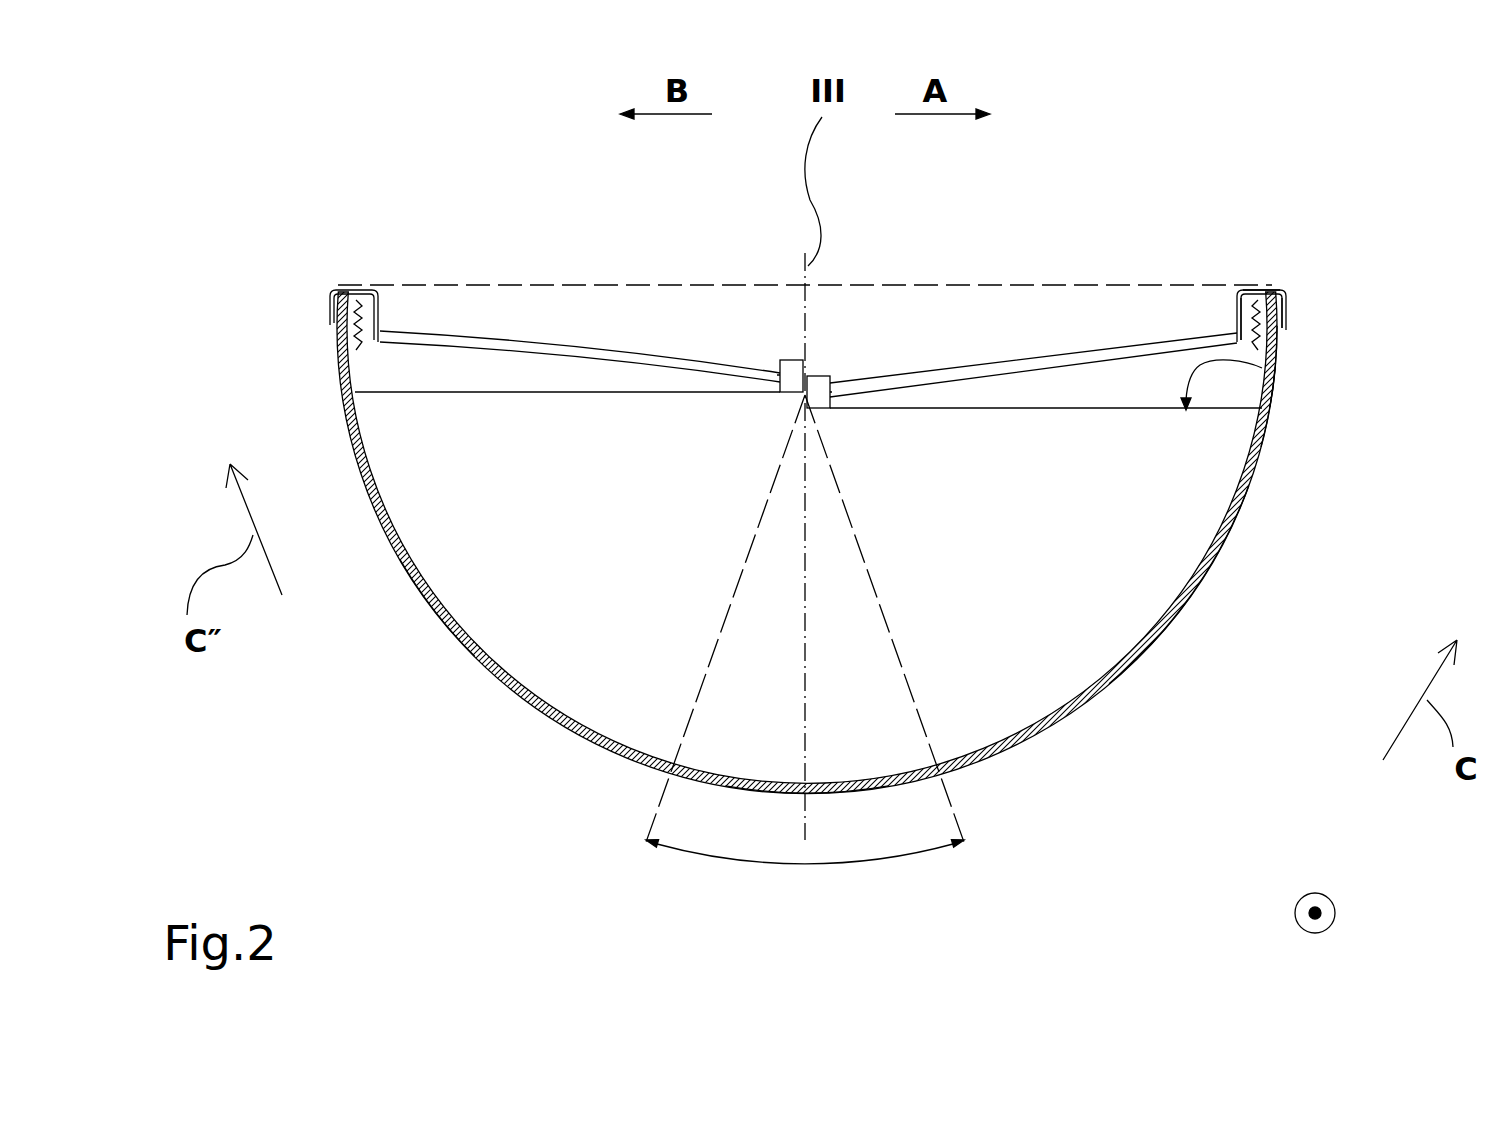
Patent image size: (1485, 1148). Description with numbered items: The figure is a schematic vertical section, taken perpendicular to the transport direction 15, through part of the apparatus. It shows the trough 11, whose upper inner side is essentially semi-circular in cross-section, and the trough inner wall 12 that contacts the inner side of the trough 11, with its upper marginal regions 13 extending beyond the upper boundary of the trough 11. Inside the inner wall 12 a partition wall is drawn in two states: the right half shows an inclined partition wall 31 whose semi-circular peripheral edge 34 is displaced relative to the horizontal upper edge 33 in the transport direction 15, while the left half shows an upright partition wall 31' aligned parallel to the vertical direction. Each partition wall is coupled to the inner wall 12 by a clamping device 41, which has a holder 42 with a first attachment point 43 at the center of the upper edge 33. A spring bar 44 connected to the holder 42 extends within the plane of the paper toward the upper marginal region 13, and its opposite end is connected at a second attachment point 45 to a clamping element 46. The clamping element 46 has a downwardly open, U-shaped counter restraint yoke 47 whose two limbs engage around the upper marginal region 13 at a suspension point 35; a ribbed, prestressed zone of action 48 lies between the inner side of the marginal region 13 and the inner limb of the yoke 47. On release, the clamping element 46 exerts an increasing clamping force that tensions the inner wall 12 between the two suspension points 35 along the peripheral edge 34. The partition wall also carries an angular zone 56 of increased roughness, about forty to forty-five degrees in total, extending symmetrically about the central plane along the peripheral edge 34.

The trough 11 is at (1110, 677).
The trough inner wall 12 is at (1013, 742).
The upper marginal region 13 is at (1275, 344).
The transport direction 15 is at (1333, 897).
The partition wall 31 is at (1196, 633).
The upright partition wall 31' is at (406, 621).
The upper edge 33 is at (1268, 390).
The peripheral edge 34 is at (1240, 531).
The suspension point 35 is at (319, 312).
The clamping device 41 is at (997, 338).
The holder 42 is at (818, 386).
The first attachment point 43 is at (766, 375).
The spring bar 44 is at (1080, 360).
The second attachment point 45 is at (389, 336).
The clamping element 46 is at (1248, 274).
The counter restraint yoke 47 is at (1250, 333).
The zone of action 48 is at (1287, 302).
The angular zone 56 is at (694, 851).